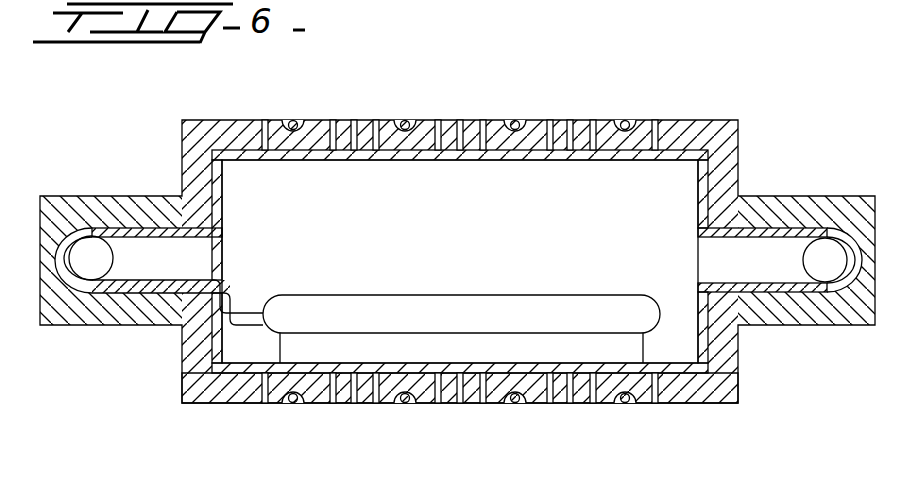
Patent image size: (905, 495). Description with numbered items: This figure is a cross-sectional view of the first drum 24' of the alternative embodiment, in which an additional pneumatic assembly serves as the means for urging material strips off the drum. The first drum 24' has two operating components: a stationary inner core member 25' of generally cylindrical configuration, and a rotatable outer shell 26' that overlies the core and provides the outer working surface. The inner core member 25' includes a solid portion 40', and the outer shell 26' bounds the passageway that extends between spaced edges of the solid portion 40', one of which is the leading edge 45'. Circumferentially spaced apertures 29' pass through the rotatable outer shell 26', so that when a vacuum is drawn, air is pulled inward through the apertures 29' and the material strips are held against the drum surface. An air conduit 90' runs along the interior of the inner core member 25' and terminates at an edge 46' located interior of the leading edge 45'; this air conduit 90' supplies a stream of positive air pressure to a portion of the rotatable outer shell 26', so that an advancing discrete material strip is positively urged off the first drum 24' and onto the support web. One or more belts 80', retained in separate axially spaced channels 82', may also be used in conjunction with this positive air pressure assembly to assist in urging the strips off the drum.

The first drum 24' is at (457, 290).
The inner core member 25' is at (460, 261).
The rotatable outer shell 26' is at (460, 413).
The apertures 29' is at (481, 260).
The solid portion 40' is at (460, 261).
The leading edge 45' is at (624, 314).
The edge 46' is at (461, 313).
The belts 80' is at (521, 231).
The channels 82' is at (338, 235).
The air conduit 90' is at (177, 328).